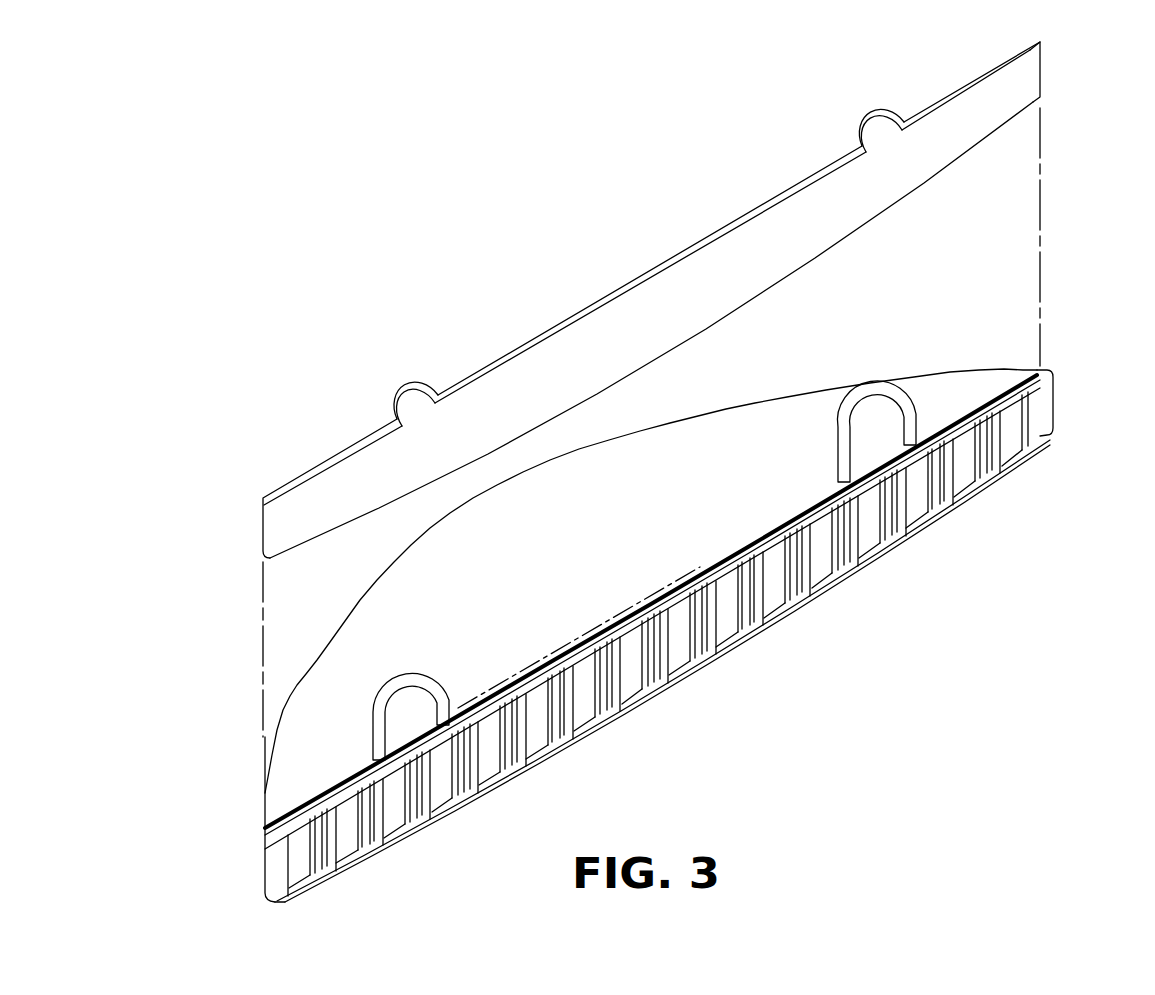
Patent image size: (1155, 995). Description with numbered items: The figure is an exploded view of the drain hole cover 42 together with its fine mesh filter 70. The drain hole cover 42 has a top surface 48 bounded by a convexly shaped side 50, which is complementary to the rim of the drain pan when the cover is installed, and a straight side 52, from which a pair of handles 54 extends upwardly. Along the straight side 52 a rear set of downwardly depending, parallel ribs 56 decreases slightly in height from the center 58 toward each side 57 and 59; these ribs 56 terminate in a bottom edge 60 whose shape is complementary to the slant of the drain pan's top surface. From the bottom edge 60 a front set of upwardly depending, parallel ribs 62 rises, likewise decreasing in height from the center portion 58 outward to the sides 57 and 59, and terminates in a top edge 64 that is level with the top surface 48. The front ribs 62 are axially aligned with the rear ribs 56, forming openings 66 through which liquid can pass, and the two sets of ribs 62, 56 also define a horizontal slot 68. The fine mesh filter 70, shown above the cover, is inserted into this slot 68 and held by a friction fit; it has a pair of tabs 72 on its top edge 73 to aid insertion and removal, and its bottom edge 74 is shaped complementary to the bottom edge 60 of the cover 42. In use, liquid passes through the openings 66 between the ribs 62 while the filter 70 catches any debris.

The drain hole cover 42 is at (837, 379).
The top surface 48 is at (555, 546).
The convexly shaped side 50 is at (663, 417).
The straight side 52 is at (1043, 395).
The handles 54 is at (850, 412).
The rear set of ribs 56 is at (880, 558).
The side 57 is at (262, 880).
The center 58 is at (702, 683).
The side 59 is at (1042, 415).
The bottom edge 60 is at (958, 485).
The front set of ribs 62 is at (998, 455).
The top edge 64 is at (770, 553).
The openings 66 is at (902, 522).
The horizontal slot 68 is at (700, 574).
The fine mesh filter 70 is at (718, 270).
The tabs 72 is at (420, 378).
The top edge 73 is at (597, 306).
The bottom edge 74 is at (723, 320).